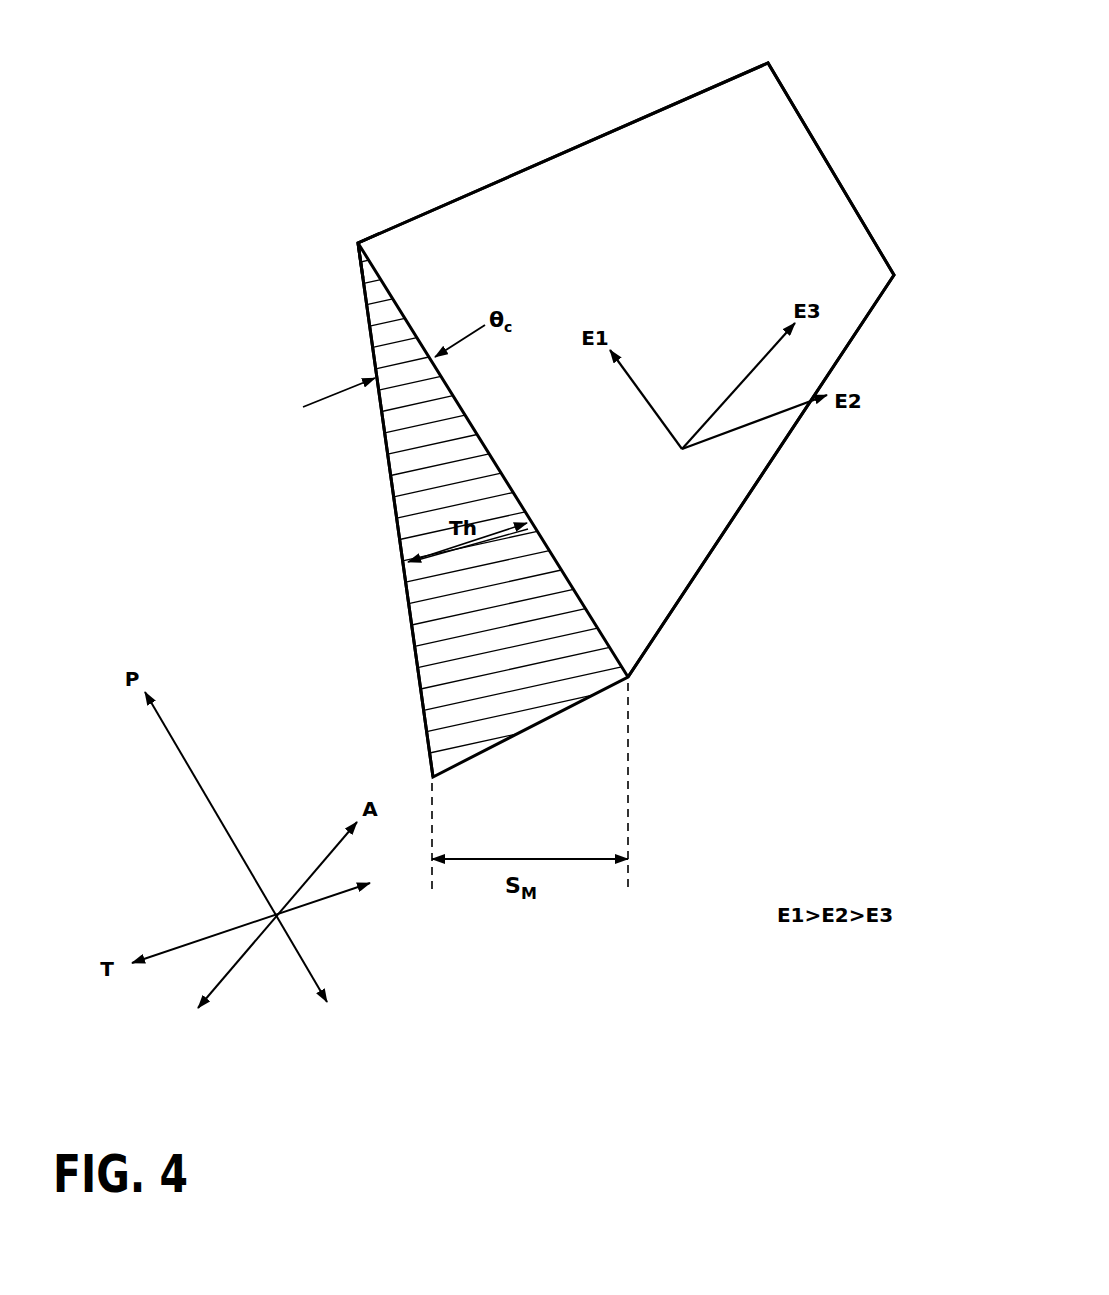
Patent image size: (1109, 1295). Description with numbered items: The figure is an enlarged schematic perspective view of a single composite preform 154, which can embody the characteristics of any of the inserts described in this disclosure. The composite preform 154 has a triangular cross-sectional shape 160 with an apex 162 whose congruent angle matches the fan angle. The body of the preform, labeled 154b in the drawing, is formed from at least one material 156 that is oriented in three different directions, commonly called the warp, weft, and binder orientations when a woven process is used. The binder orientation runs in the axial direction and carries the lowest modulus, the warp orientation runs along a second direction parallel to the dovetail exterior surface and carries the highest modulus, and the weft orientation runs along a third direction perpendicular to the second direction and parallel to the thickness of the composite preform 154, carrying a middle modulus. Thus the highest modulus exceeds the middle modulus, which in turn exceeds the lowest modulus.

The composite preform 154 is at (153, 185).
The insert body 154b is at (746, 192).
The at least one material 156 is at (529, 627).
The triangular cross-sectional shape 160 is at (390, 490).
The apex 162 is at (358, 243).